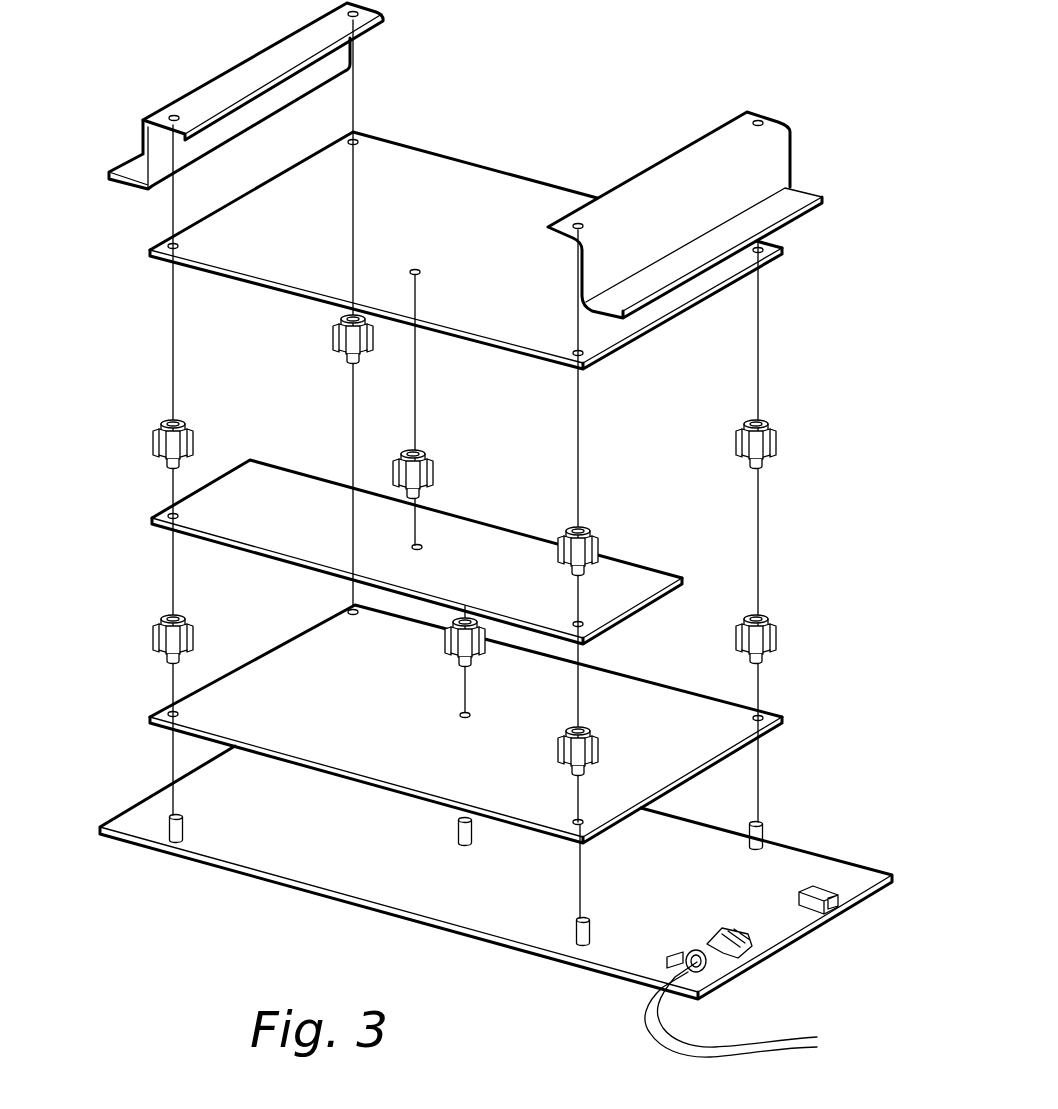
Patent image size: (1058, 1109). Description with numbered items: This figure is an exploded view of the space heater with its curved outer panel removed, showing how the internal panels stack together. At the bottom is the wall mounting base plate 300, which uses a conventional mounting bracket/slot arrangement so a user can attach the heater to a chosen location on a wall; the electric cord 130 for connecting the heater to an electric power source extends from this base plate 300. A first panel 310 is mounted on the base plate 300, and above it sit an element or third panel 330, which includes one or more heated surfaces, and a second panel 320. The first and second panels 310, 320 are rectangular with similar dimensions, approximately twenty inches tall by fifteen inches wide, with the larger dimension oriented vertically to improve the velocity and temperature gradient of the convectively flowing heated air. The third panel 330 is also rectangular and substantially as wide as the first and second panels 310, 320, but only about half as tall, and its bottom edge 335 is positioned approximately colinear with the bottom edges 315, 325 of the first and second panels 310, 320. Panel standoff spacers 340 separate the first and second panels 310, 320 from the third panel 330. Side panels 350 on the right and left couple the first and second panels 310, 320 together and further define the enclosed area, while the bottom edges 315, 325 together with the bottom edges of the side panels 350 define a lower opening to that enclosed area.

The electric cord 130 is at (748, 1048).
The wall mounting base plate 300 is at (783, 868).
The first panel 310 is at (625, 690).
The bottom edge of the first panel 315 is at (285, 760).
The second panel 320 is at (412, 160).
The bottom edge of the second panel 325 is at (268, 288).
The third panel 330 is at (592, 527).
The bottom edge of the third panel 335 is at (272, 560).
The panel standoff spacers 340 is at (335, 333).
The side panels 350 is at (290, 46).